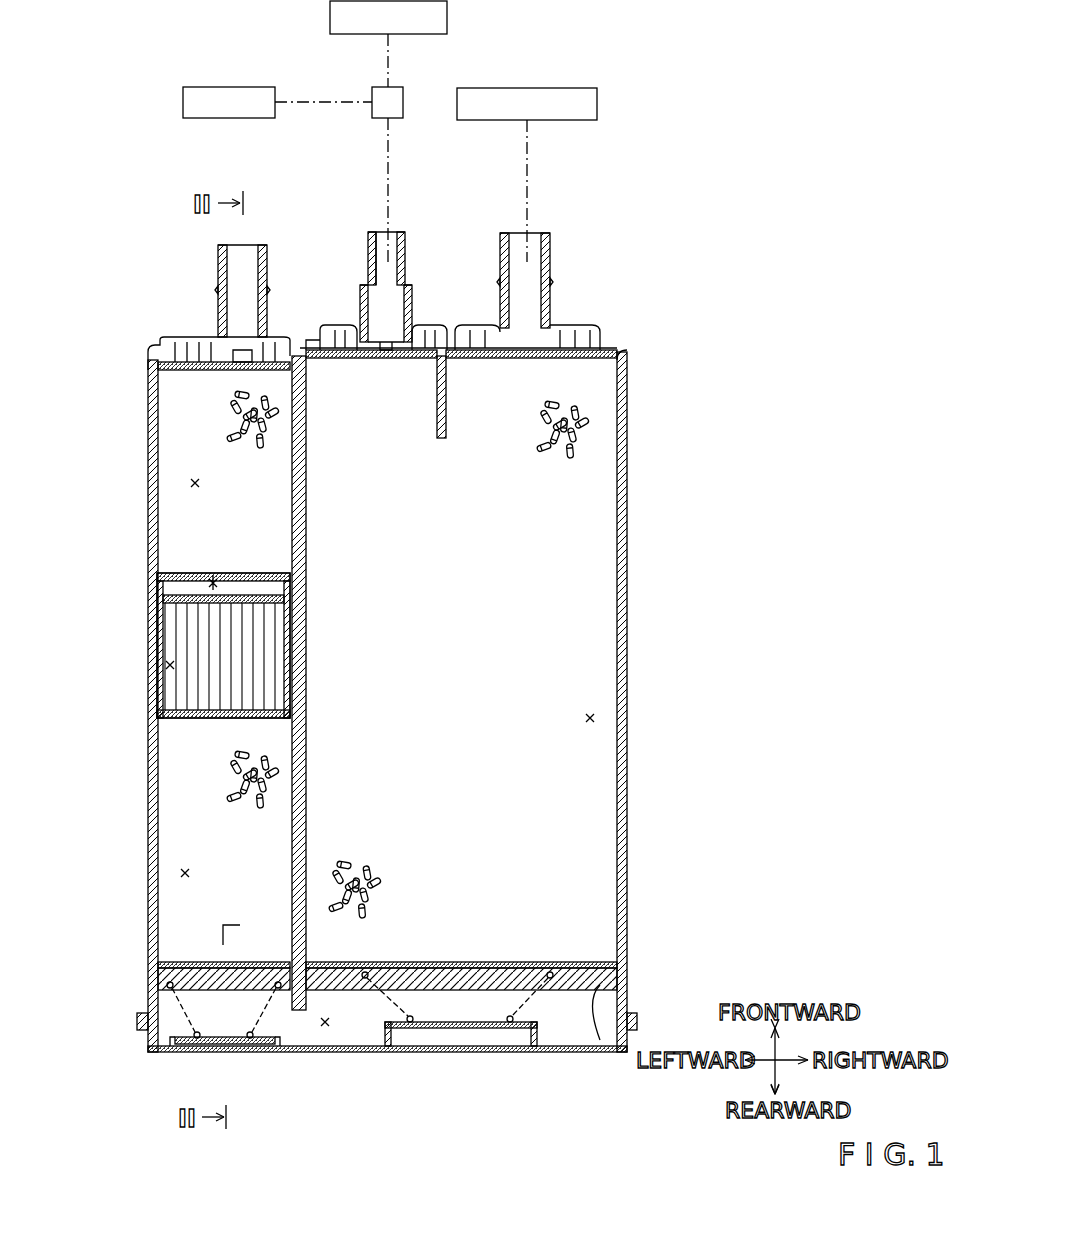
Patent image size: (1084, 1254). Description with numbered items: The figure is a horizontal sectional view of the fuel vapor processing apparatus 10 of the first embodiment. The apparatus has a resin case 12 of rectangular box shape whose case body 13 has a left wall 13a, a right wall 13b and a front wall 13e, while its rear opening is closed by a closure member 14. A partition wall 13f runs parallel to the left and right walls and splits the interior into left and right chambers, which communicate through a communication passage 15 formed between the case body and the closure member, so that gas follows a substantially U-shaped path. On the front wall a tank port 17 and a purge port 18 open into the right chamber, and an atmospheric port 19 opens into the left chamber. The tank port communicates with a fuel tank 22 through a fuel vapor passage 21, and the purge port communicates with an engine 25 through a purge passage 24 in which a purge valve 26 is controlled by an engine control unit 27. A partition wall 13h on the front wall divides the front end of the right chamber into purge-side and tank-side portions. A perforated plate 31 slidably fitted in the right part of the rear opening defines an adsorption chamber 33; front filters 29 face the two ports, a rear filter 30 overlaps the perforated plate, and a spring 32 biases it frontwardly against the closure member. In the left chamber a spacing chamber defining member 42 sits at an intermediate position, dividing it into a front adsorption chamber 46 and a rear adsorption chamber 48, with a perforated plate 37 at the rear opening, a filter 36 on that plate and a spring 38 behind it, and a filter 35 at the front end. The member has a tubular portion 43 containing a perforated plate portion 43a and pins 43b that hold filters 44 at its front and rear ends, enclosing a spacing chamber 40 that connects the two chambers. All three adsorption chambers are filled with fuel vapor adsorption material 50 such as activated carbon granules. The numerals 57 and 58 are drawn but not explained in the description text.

The apparatus 10 is at (396, 666).
The case 12 is at (396, 666).
The case body 13 is at (396, 666).
The left wall 13a is at (150, 808).
The right wall 13b is at (622, 808).
The front wall 13e is at (330, 350).
The partition wall 13f is at (306, 512).
The partition wall 13h is at (441, 440).
The closure member 14 is at (387, 1059).
The communication passage 15 is at (325, 1026).
The tank port 17 is at (552, 258).
The purge port 18 is at (406, 255).
The atmospheric port 19 is at (218, 285).
The fuel vapor passage 21 is at (528, 168).
The fuel tank 22 is at (597, 104).
The purge passage 24 is at (386, 64).
The engine 25 is at (447, 17).
The purge valve 26 is at (385, 120).
The engine control unit (ECU) 27 is at (196, 87).
The front filters 29 is at (430, 345).
The rear filter 30 is at (525, 962).
The perforated plate 31 is at (596, 990).
The spring 32 is at (540, 1030).
The adsorption chamber 33 is at (592, 718).
The filter 35 is at (183, 360).
The filter 36 is at (190, 962).
The perforated plate 37 is at (225, 990).
The spring 38 is at (180, 1005).
The spacing chamber 40 is at (233, 634).
The spacing chamber defining member 42 is at (160, 686).
The tubular portion 43 is at (233, 623).
The plate portion 43a is at (237, 575).
The pins 43b is at (172, 582).
The filters 44 is at (272, 578).
The adsorption chamber 46 is at (194, 483).
The adsorption chamber 48 is at (184, 873).
The fuel vapor adsorption material 50 is at (235, 420).
The rib 57 is at (170, 665).
The rib 58 is at (213, 578).